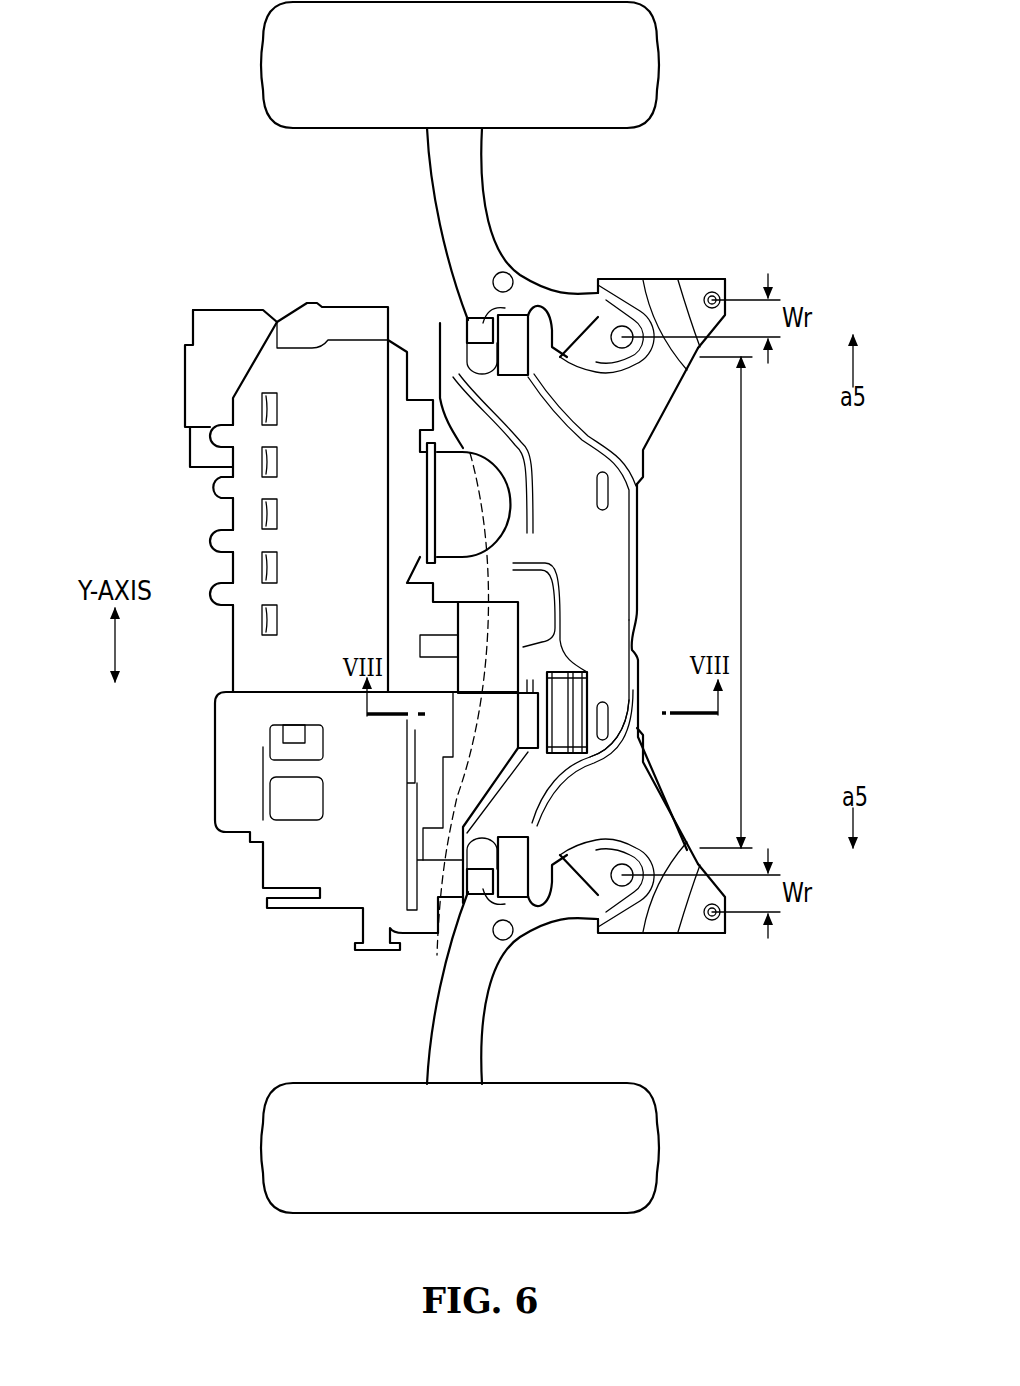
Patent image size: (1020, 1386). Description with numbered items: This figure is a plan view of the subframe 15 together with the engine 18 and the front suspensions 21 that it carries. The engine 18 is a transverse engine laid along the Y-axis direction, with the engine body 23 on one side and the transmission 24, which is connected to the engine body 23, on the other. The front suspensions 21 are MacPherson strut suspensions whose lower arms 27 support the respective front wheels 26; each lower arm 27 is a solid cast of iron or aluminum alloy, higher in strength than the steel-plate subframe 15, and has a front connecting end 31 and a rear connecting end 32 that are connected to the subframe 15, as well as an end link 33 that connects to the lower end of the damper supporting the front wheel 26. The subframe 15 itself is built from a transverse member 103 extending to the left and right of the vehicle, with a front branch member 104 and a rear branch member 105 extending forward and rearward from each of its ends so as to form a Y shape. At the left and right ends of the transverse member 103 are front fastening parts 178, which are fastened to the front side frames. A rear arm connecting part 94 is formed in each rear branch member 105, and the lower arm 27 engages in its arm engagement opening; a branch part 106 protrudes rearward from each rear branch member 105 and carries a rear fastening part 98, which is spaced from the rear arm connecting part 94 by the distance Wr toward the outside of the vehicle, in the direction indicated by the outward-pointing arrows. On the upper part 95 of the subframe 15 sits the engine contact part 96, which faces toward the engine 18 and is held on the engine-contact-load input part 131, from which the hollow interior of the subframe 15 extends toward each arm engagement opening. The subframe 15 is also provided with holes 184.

The subframe 15 is at (418, 302).
The engine 18 is at (165, 402).
The front suspension 21 is at (605, 218).
The engine body 23 is at (303, 513).
The transmission 24 is at (255, 717).
The front wheel 26 is at (263, 65).
The lower arm 27 is at (428, 180).
The front connecting end 31 is at (472, 332).
The rear connecting end 32 is at (582, 315).
The end link 33 is at (463, 145).
The rear arm connecting part 94 is at (632, 353).
The upper part 95 is at (548, 780).
The engine contact part 96 is at (597, 672).
The rear fastening part 98 is at (718, 292).
The transverse member 103 is at (740, 518).
The front branch member 104 is at (535, 333).
The rear branch member 105 is at (637, 287).
The branch part 106 is at (733, 293).
The engine-contact-load input part 131 is at (610, 685).
The front fastening part 178 is at (513, 328).
The hole 184 is at (602, 722).